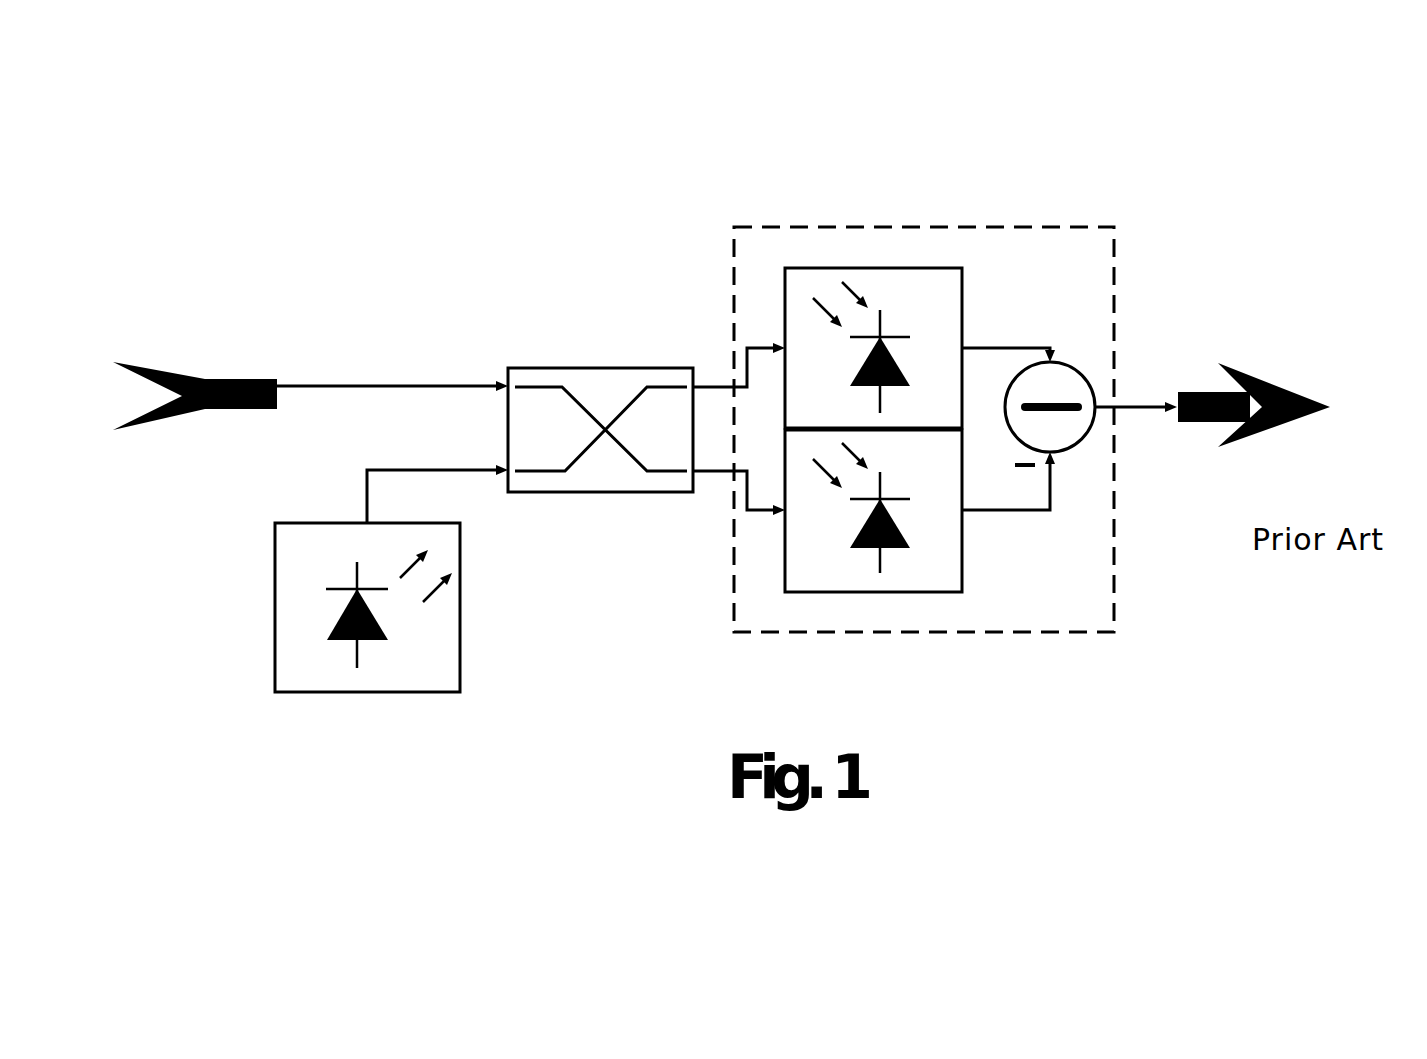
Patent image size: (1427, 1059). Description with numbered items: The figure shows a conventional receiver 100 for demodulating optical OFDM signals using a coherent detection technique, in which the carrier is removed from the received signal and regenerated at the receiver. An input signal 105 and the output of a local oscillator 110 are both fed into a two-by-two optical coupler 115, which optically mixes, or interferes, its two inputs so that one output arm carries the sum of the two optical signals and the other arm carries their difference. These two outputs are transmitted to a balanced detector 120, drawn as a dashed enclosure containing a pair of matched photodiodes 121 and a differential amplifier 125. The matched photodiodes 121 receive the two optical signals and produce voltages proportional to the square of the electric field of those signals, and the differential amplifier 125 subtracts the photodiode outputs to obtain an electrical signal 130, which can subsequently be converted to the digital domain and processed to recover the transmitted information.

The receiver 100 is at (298, 150).
The input signal 105 is at (278, 378).
The local oscillator 110 is at (460, 600).
The 2×2 optical coupler 115 is at (615, 367).
The balanced detector 120 is at (1114, 255).
The matched photodiodes 121 is at (962, 540).
The differential amplifier 125 is at (1078, 368).
The electrical signal 130 is at (1330, 407).